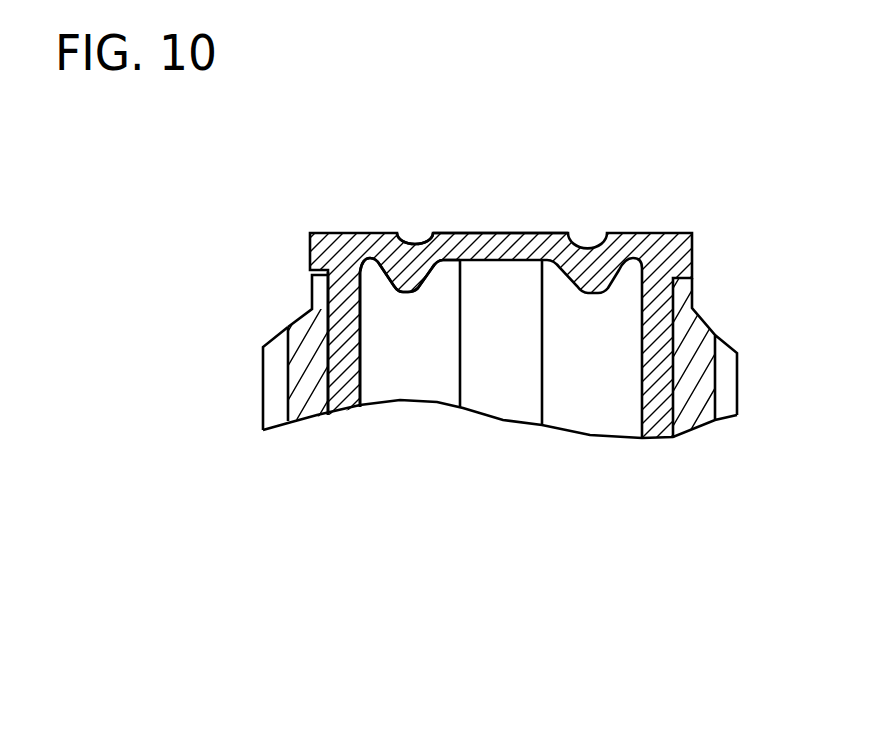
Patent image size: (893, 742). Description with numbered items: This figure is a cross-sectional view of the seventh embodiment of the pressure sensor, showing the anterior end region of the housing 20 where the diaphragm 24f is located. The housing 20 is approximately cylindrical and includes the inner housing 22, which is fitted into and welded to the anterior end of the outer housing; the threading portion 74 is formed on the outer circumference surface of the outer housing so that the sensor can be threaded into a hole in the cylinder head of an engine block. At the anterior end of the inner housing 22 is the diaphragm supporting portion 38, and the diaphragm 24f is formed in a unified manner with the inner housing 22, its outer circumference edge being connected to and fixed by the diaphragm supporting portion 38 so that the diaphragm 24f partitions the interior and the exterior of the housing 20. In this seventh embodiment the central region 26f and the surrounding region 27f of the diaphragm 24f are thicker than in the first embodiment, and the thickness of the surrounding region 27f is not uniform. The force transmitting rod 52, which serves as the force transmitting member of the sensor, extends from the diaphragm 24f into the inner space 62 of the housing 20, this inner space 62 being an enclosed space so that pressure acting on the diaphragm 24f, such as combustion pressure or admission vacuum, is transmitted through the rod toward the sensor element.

The housing 20 is at (268, 327).
The inner housing 22 is at (343, 410).
The diaphragm 24f is at (481, 219).
The central region 26f is at (532, 246).
The surrounding region 27f is at (457, 290).
The diaphragm supporting portion 38 is at (310, 248).
The force transmitting rod 52 is at (501, 404).
The inner space 62 is at (308, 410).
The threading portion 74 is at (276, 420).